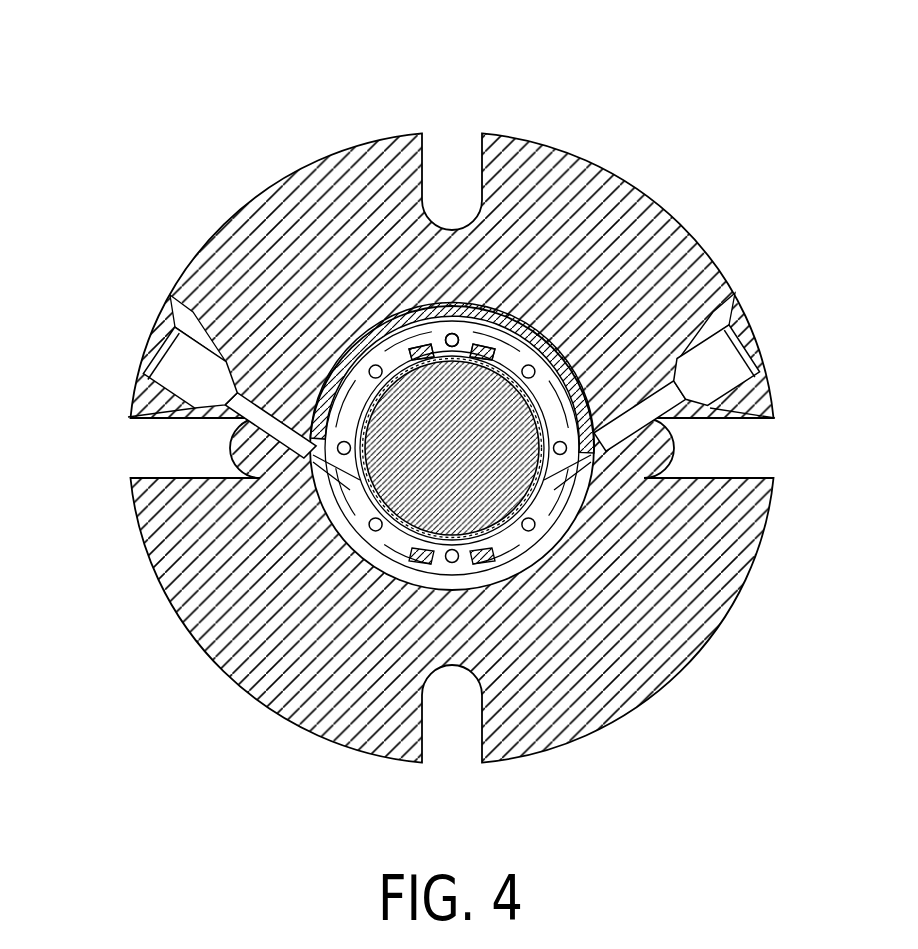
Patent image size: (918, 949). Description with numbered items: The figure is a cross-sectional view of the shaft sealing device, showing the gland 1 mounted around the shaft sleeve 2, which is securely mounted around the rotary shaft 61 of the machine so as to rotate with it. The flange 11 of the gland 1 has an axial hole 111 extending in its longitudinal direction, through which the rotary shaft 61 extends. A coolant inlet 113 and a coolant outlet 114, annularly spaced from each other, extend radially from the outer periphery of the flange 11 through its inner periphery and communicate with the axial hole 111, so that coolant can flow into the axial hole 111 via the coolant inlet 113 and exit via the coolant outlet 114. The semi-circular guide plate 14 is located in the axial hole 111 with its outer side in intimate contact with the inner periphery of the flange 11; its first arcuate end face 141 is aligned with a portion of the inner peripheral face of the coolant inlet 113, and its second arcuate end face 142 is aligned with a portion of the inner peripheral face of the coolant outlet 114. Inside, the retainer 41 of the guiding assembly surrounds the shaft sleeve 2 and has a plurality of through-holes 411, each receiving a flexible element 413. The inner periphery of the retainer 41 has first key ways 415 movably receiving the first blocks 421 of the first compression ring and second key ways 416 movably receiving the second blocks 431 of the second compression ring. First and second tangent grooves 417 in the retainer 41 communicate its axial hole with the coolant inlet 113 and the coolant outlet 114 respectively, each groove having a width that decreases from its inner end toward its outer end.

The gland 1 is at (447, 424).
The flange 11 is at (775, 500).
The axial hole 111 is at (278, 657).
The coolant inlet 113 is at (278, 426).
The coolant outlet 114 is at (643, 420).
The guide plate 14 is at (362, 348).
The first arcuate end face 141 is at (345, 488).
The second arcuate end face 142 is at (560, 490).
The shaft sleeve 2 is at (503, 523).
The retainer 41 is at (533, 330).
The through-holes 411 is at (452, 337).
The flexible element 413 is at (452, 340).
The first key ways 415 is at (482, 352).
The second key ways 416 is at (421, 352).
The first and second tangent grooves 417 is at (343, 528).
The first blocks 421 is at (484, 345).
The second blocks 431 is at (414, 345).
The rotary shaft 61 is at (395, 535).